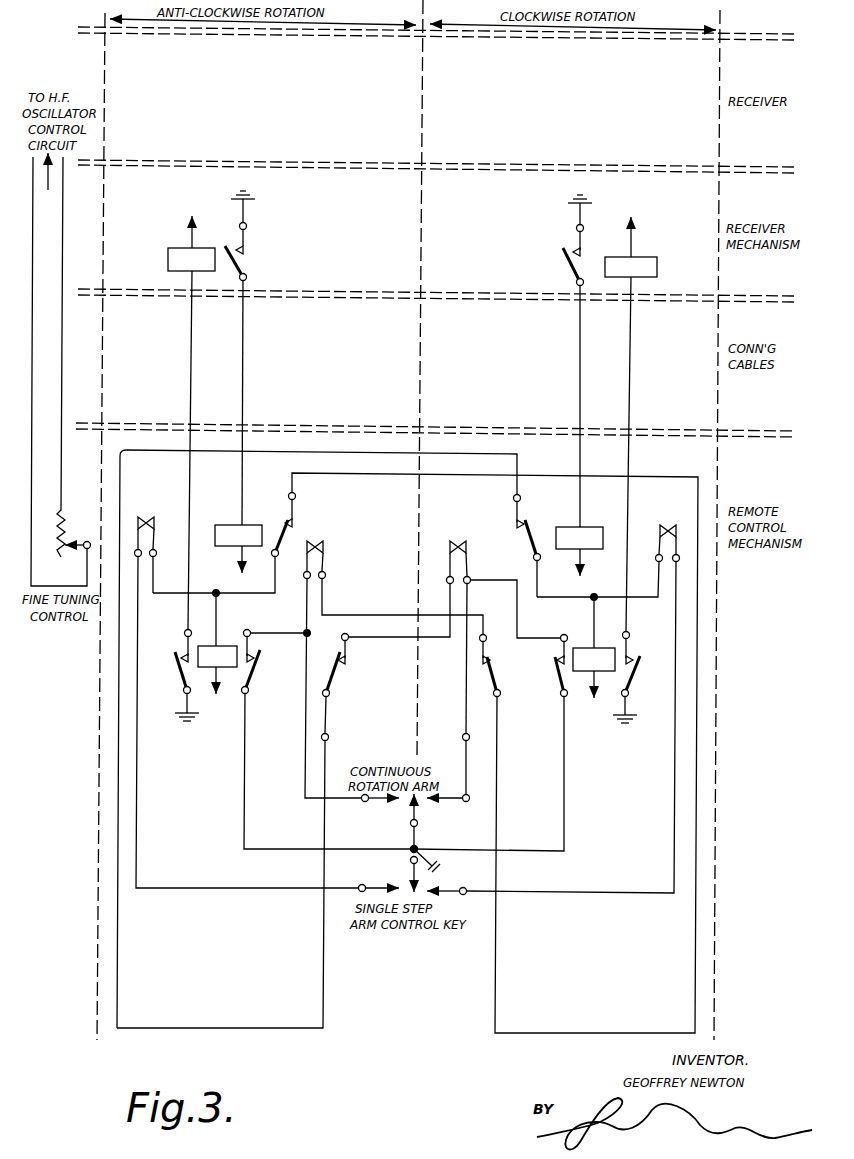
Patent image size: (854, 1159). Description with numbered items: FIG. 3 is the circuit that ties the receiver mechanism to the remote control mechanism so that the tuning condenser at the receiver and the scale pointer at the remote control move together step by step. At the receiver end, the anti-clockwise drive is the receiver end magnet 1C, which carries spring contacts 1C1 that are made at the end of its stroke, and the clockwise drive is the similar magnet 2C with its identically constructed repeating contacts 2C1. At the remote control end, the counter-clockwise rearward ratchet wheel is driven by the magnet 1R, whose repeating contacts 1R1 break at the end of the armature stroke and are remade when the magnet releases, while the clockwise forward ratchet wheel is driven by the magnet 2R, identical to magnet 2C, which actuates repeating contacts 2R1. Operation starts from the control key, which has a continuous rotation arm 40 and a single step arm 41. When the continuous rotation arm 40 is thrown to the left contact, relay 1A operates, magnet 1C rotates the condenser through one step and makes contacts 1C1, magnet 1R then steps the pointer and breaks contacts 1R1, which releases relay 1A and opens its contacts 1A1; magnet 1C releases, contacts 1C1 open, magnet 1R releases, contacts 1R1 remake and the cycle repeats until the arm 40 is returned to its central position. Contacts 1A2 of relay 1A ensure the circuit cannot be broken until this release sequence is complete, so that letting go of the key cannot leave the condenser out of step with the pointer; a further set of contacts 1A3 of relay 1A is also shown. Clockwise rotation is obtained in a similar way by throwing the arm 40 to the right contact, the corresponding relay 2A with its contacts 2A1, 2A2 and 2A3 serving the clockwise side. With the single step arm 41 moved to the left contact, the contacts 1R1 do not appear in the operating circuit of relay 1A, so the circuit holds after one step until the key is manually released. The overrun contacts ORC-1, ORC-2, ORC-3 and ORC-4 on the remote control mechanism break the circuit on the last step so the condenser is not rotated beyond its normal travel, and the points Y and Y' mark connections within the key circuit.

The continuous rotation arm 40 is at (418, 823).
The single step arm 41 is at (410, 862).
The receiver end magnet 1C is at (191, 422).
The spring contacts 1C1 is at (254, 358).
The receiver magnet 2C is at (631, 424).
The repeating contacts 2C1 is at (550, 361).
The remote control end magnet 1R is at (238, 549).
The repeating contacts 1R1 is at (237, 545).
The magnet 2R is at (579, 551).
The repeating contacts 2R1 is at (514, 546).
The relay 1A is at (217, 643).
The contacts 1A1 is at (175, 676).
The contacts 1A2 is at (328, 740).
The switch contact 1A3 is at (345, 684).
The relay 2A is at (594, 647).
The switch contact 2A1 is at (636, 678).
The switch contact 2A2 is at (491, 743).
The switch contact 2A3 is at (499, 666).
The one-revolution cam contact ORC-1 is at (262, 696).
The one-revolution cam contact ORC-2 is at (553, 700).
The one-revolution cam contact ORC-3 is at (394, 671).
The one-revolution cam contact ORC-4 is at (454, 671).
The terminal Y is at (334, 738).
The terminal Y' is at (456, 737).